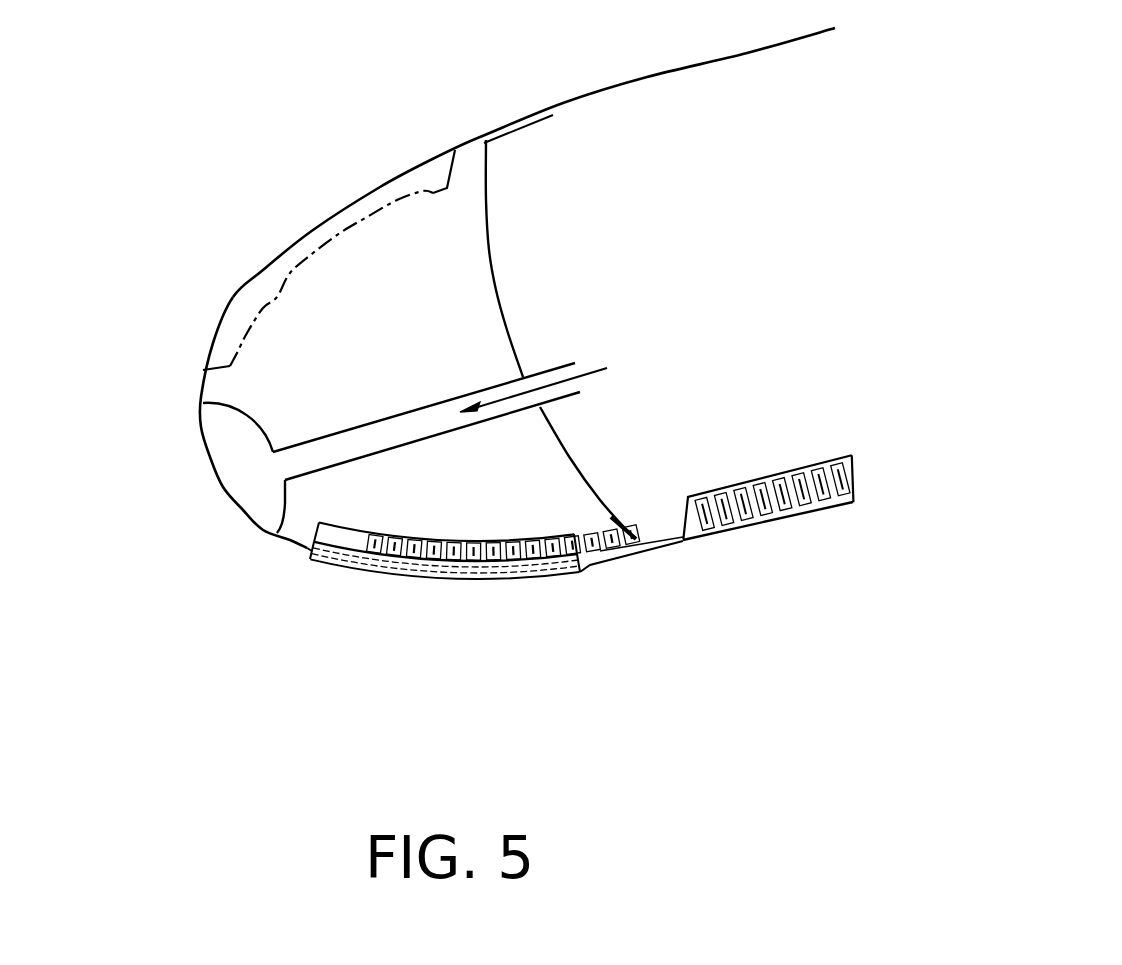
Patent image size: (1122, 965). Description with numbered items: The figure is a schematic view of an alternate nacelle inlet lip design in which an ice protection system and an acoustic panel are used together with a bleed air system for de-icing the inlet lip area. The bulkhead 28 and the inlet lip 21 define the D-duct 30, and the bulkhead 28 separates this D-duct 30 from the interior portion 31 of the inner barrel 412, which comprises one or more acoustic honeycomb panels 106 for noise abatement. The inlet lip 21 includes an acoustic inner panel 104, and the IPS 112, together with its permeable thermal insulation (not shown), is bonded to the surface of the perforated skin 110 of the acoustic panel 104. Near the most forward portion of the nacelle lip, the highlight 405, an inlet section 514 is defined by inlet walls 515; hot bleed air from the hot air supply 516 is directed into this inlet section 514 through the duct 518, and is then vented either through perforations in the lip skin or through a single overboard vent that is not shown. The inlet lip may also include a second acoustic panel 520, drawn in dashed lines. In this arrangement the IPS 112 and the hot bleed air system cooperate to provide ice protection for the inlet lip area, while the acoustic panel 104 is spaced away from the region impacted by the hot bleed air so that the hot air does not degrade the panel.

The inlet lip 21 is at (287, 543).
The bulkhead 28 is at (493, 263).
The D-duct 30 is at (440, 319).
The interior portion 31 is at (758, 387).
The acoustic panel 104 is at (417, 537).
The acoustic honeycomb panel 106 is at (767, 473).
The perforated skin 110 is at (573, 603).
The IPS 112 is at (432, 578).
The highlight 405 is at (217, 483).
The inner barrel 412 is at (735, 531).
The inlet section 514 is at (237, 457).
The inlet walls 515 is at (250, 420).
The hot air supply 516 is at (566, 373).
The duct 518 is at (426, 421).
The second acoustic panel 520 is at (315, 247).